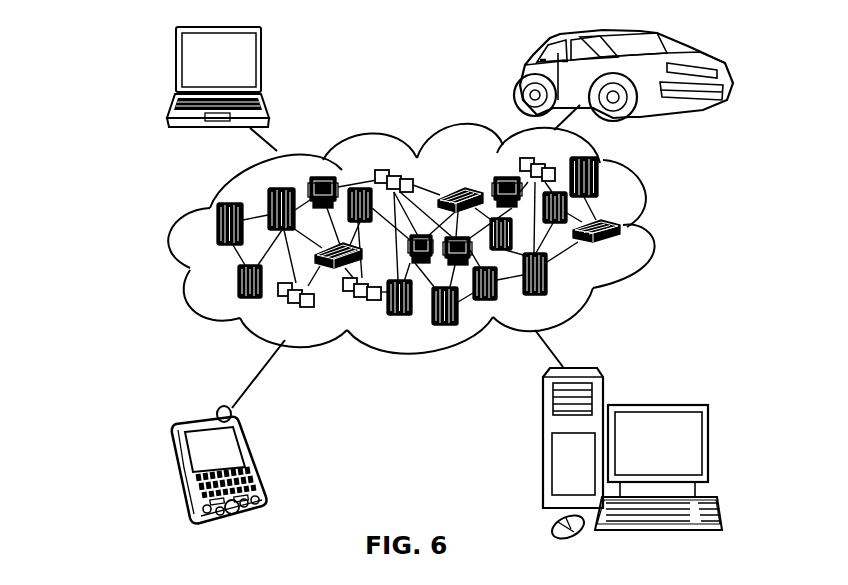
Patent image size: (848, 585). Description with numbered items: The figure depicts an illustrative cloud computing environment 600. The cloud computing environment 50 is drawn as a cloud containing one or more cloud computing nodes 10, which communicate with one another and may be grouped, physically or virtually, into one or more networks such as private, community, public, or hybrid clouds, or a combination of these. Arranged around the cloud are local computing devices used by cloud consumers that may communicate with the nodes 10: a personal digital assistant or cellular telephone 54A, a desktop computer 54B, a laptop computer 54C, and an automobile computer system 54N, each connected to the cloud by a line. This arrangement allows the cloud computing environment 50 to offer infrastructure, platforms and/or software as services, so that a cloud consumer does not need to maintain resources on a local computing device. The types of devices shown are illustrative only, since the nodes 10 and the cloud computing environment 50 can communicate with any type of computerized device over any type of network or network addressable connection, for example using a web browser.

The cloud computing environment 600 is at (82, 58).
The laptop computer 54C is at (264, 66).
The automobile computer system 54N is at (524, 73).
The cloud computing environment 50 is at (658, 230).
The cloud computing nodes 10 is at (636, 252).
The personal digital assistant or cellular telephone 54A is at (256, 458).
The desktop computer 54B is at (655, 405).